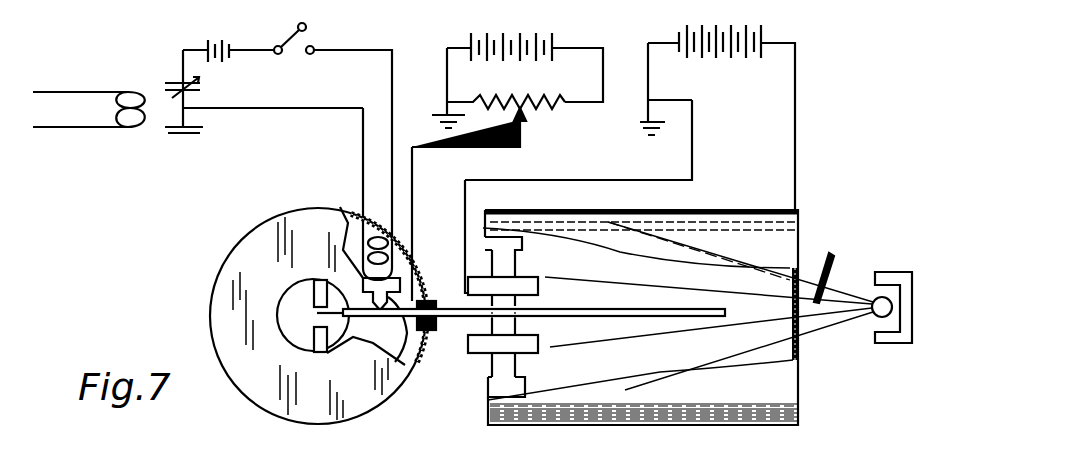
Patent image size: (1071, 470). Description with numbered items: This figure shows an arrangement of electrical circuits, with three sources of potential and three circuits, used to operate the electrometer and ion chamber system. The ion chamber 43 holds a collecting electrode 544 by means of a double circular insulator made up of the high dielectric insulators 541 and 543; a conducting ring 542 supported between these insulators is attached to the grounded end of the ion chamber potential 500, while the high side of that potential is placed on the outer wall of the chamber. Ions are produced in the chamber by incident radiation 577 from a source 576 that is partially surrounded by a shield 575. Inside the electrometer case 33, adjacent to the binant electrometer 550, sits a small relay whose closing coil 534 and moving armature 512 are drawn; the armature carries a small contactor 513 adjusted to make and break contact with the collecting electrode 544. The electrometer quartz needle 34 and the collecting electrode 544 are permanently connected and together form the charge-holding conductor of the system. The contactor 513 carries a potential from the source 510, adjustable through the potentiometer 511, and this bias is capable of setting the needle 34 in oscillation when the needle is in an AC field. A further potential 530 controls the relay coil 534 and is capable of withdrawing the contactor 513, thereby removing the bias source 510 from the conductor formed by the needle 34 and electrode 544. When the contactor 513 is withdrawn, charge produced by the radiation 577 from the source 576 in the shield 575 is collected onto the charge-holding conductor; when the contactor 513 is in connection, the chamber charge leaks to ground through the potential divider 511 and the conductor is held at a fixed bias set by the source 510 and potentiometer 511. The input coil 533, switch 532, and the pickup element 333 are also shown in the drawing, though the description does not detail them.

The electrometer case 33 is at (222, 283).
The electrometer needle 34 is at (334, 351).
The ion chamber 43 is at (655, 413).
The detector pickup 333 is at (437, 332).
The ion chamber potential 500 is at (702, 30).
The potential source 510 is at (497, 13).
The potentiometer 511 is at (532, 110).
The moving armature 512 is at (345, 250).
The contactor 513 is at (395, 362).
The potential 530 is at (203, 40).
The switch 532 is at (306, 29).
The input coil 533 is at (152, 100).
The relay closing coil 534 is at (375, 198).
The insulator 541 is at (510, 257).
The conducting ring 542 is at (537, 288).
The insulator 543 is at (520, 325).
The collecting electrode 544 is at (605, 315).
The binant electrometer 550 is at (290, 298).
The shield 575 is at (898, 276).
The source 576 is at (876, 318).
The incident radiation 577 is at (845, 267).